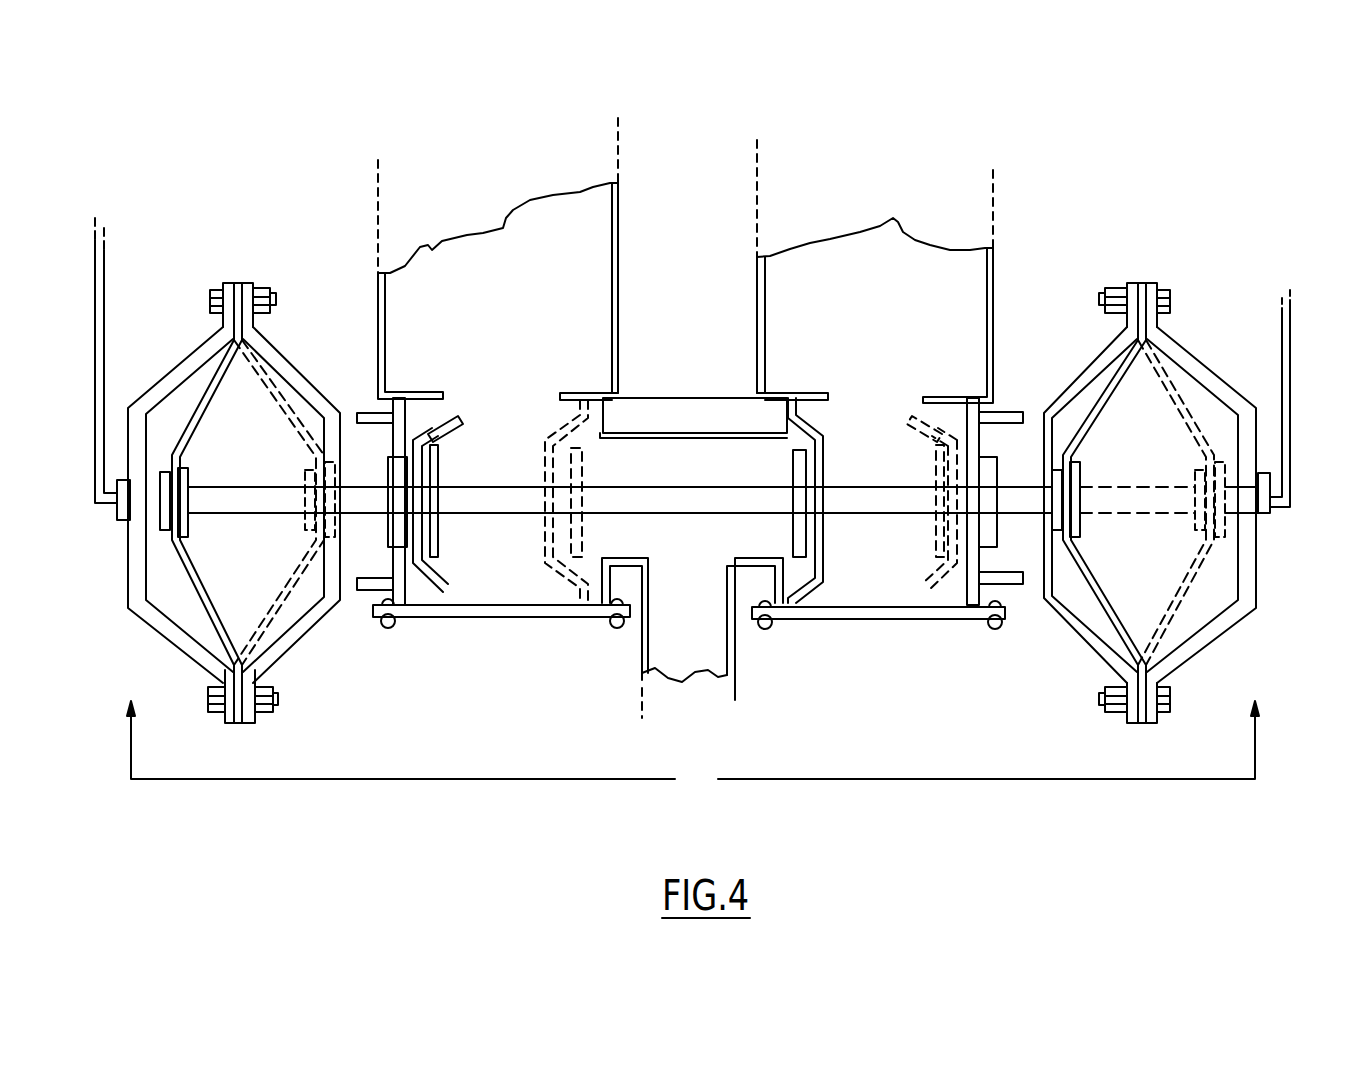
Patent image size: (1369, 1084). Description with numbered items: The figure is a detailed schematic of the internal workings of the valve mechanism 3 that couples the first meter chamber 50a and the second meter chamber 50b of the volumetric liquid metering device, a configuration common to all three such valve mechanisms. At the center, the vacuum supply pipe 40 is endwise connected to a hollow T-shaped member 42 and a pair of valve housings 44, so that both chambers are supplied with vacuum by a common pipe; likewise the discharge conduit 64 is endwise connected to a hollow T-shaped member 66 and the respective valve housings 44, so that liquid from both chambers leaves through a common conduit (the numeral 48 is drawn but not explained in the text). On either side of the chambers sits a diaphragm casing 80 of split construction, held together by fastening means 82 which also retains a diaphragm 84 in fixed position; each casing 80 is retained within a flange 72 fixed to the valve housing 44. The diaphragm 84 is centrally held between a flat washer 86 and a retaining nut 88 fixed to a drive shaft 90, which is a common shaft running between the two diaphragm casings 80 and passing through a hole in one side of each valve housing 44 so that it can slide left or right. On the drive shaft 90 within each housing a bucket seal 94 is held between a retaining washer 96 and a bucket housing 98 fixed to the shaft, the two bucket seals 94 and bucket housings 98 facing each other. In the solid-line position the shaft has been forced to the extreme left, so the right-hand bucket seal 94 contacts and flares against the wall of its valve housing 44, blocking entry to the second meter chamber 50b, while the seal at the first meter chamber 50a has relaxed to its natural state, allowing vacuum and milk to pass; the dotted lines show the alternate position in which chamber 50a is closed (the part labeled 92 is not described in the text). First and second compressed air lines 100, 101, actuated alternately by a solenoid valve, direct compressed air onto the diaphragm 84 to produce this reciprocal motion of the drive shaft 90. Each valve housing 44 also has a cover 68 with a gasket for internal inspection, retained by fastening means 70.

The valve mechanism 3 is at (693, 750).
The vacuum supply pipe 40 is at (641, 425).
The hollow T-shaped member 42 is at (693, 410).
The valve housing 44 is at (407, 580).
The tube portion 48 is at (641, 425).
The first meter chamber 50a is at (508, 187).
The second meter chamber 50b is at (898, 183).
The discharge conduit 64 is at (643, 665).
The hollow T-shaped member 66 is at (747, 432).
The cover 68 is at (893, 619).
The fastening means 70 is at (770, 626).
The flange 72 is at (367, 413).
The diaphragm casing 80 is at (177, 368).
The fastening means 82 is at (215, 290).
The diaphragm 84 is at (205, 418).
The flat washer 86 is at (190, 475).
The retaining nut 88 is at (125, 505).
The drive shaft 90 is at (255, 500).
The bracket 92 is at (397, 530).
The bucket seal 94 is at (463, 422).
The retaining washer 96 is at (440, 458).
The bucket housing 98 is at (428, 412).
The first compressed air line 100 is at (93, 300).
The second compressed air line 101 is at (1292, 330).